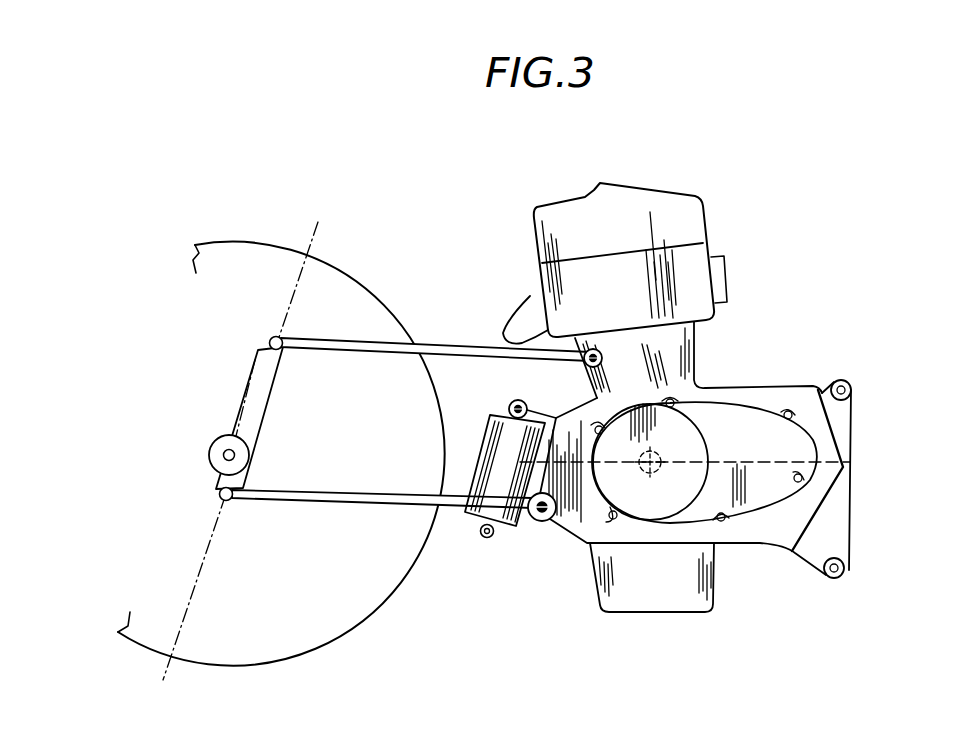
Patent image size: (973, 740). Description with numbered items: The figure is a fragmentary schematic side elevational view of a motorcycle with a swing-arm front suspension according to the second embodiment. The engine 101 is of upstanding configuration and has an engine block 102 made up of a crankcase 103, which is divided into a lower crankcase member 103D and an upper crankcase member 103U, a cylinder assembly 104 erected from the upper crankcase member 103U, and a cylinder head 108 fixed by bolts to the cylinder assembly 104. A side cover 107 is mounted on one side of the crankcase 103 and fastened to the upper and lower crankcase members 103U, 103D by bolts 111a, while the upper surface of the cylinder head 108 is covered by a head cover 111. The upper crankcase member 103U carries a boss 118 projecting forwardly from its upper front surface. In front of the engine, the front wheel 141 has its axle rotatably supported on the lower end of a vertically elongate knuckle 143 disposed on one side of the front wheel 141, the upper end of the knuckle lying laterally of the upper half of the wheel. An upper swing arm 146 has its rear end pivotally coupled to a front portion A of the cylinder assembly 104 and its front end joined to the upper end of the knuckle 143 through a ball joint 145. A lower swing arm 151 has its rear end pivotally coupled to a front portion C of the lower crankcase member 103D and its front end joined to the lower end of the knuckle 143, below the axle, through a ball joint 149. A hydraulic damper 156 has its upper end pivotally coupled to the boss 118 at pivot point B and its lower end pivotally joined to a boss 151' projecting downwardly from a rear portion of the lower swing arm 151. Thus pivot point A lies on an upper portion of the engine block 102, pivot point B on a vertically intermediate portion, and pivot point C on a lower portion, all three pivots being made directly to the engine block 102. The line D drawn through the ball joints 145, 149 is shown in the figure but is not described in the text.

The engine 101 is at (651, 247).
The engine block 102 is at (727, 508).
The crankcase 103 is at (831, 463).
The upper crankcase member 103U is at (723, 393).
The lower crankcase member 103D is at (818, 487).
The cylinder assembly 104 is at (680, 353).
The side cover 107 is at (777, 493).
The cylinder head 108 is at (690, 257).
The head cover 111 is at (688, 222).
The bolts 111a is at (786, 418).
The boss 118 is at (543, 416).
The front wheel 141 is at (257, 242).
The knuckle 143 is at (252, 382).
The ball joint 145 is at (280, 337).
The upper swing arm 146 is at (442, 351).
The ball joint 149 is at (222, 501).
The lower swing arm 151 is at (382, 525).
The boss 151' is at (459, 543).
The hydraulic damper 156 is at (487, 453).
The pivot point A is at (595, 347).
The pivot point B is at (512, 404).
The pivot point C is at (542, 521).
The axis D is at (318, 243).